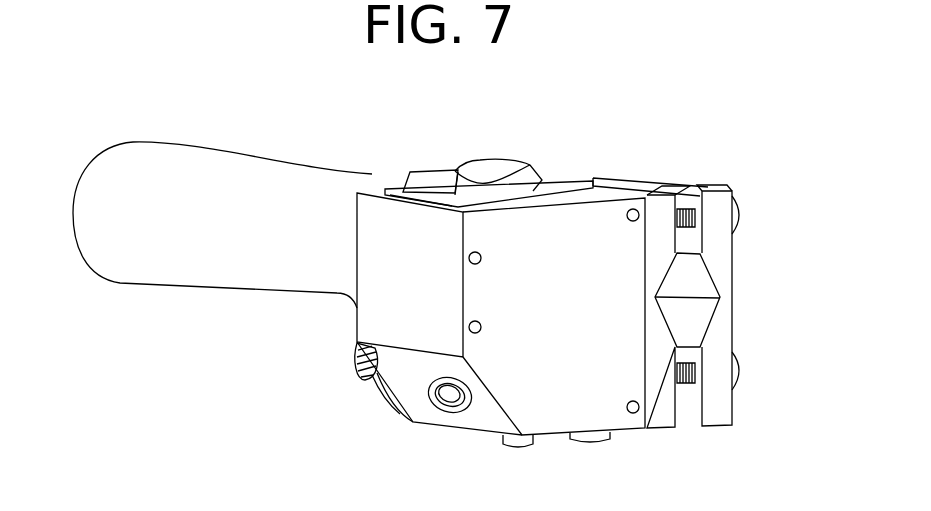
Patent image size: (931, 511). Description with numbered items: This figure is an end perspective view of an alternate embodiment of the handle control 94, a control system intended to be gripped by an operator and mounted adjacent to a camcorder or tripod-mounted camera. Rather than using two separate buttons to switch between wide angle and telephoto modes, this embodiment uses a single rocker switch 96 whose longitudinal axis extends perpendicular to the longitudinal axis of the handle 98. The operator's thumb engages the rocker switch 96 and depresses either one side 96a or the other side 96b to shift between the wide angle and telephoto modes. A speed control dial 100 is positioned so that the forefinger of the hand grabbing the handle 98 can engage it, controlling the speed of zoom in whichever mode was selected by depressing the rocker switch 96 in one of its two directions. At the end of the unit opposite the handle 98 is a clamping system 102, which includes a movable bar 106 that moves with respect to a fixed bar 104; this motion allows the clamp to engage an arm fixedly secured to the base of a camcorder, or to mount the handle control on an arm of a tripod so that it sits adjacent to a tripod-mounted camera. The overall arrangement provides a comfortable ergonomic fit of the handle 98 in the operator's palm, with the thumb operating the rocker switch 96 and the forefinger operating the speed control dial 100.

The handle control 94 is at (576, 150).
The rocker switch 96 is at (542, 170).
The side of rocker switch 96a is at (493, 168).
The side of rocker switch 96b is at (428, 172).
The handle 98 is at (196, 273).
The speed control dial 100 is at (365, 380).
The clamping system 102 is at (704, 270).
The fixed bar 104 is at (658, 200).
The movable bar 106 is at (720, 198).